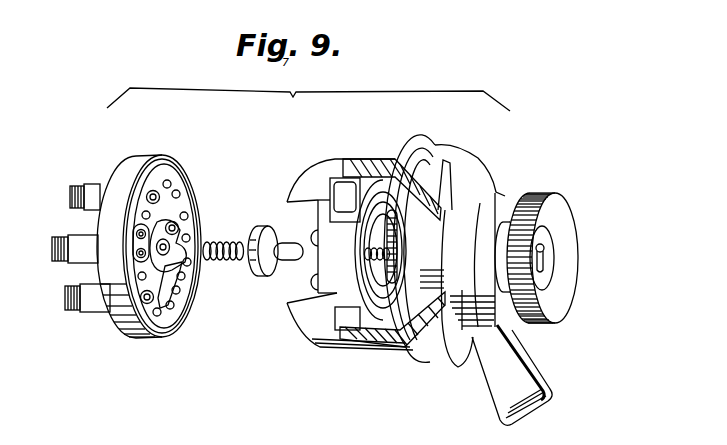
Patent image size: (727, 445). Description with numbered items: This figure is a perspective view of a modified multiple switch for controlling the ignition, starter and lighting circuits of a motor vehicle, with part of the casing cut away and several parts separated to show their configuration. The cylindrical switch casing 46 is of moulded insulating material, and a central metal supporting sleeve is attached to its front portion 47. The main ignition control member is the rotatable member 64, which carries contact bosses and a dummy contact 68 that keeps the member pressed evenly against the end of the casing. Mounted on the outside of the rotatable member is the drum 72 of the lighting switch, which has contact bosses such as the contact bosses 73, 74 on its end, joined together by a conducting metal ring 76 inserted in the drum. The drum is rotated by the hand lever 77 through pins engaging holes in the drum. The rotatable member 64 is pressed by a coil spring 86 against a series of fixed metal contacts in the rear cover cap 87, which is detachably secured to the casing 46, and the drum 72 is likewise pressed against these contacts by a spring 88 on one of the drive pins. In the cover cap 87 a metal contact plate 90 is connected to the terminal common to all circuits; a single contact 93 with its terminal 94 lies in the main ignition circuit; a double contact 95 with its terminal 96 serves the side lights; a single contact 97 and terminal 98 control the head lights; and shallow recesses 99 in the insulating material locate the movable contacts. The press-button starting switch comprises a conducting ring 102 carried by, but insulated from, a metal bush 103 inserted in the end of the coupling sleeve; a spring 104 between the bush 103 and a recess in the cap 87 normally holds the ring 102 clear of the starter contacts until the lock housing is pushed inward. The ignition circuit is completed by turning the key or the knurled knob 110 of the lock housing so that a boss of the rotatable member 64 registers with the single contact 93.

The cylindrical switch casing 46 is at (353, 160).
The front portion of the casing 47 is at (433, 157).
The rotatable member 64 is at (342, 178).
The dummy contact 68 is at (345, 192).
The drum 72 is at (335, 233).
The contact boss 73 is at (316, 236).
The contact boss 74 is at (314, 281).
The conducting metal ring 76 is at (355, 333).
The hand lever 77 is at (525, 378).
The coil spring 86 is at (453, 178).
The rear cover cap 87 is at (127, 188).
The spring 88 is at (364, 255).
The metal contact plate 90 is at (168, 280).
The single contact 93 is at (125, 319).
The terminal 94 is at (95, 305).
The double contact 95 is at (136, 248).
The terminal 96 is at (82, 243).
The single contact 97 is at (147, 193).
The terminal 98 is at (90, 200).
The shallow recesses 99 is at (183, 212).
The conducting ring 102 is at (273, 277).
The metal bush 103 is at (283, 260).
The spring 104 is at (223, 262).
The knurled knob 110 is at (548, 193).